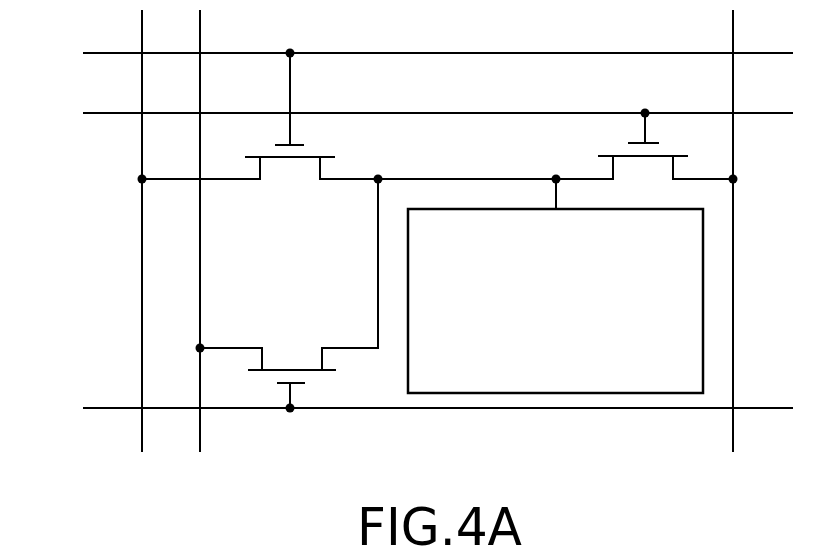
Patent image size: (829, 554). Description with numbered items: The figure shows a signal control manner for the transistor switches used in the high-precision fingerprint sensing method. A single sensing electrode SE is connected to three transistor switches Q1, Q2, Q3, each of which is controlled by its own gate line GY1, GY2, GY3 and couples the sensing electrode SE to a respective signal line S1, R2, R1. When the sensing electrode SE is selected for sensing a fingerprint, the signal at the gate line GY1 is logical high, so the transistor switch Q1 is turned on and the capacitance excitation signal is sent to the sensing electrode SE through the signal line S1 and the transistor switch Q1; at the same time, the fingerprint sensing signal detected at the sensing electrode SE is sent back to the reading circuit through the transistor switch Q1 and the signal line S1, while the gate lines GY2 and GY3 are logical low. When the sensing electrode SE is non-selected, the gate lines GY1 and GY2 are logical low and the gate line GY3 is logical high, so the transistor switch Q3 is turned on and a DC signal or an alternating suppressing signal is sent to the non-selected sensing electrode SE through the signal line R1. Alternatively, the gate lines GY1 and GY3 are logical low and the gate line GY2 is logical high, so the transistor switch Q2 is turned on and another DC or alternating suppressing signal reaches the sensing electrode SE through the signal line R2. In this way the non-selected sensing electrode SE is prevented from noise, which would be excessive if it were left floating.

The gate line GY1 is at (410, 53).
The gate line GY2 is at (410, 113).
The gate line GY3 is at (410, 409).
The signal line S1 is at (142, 248).
The signal line R1 is at (201, 248).
The signal line R2 is at (734, 248).
The transistor switch Q1 is at (260, 125).
The transistor switch Q2 is at (558, 155).
The transistor switch Q3 is at (287, 296).
The sensing electrode SE is at (555, 286).